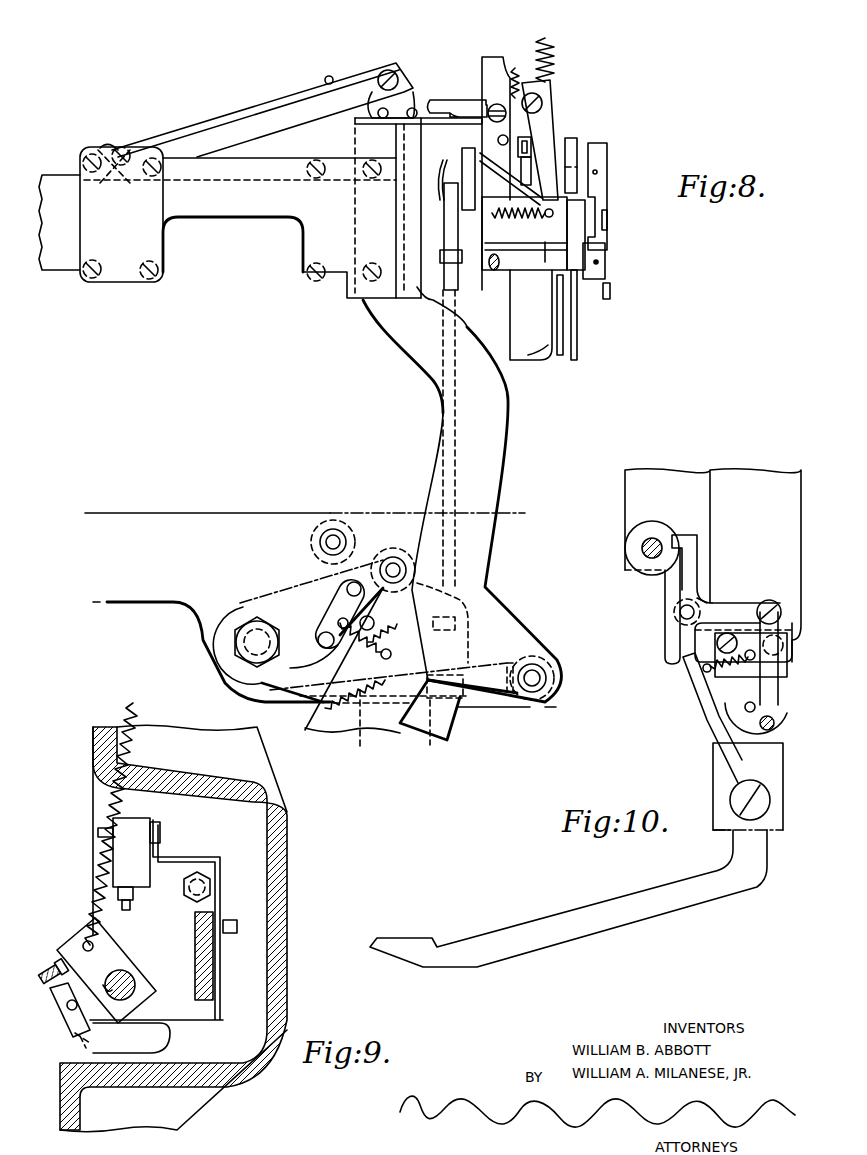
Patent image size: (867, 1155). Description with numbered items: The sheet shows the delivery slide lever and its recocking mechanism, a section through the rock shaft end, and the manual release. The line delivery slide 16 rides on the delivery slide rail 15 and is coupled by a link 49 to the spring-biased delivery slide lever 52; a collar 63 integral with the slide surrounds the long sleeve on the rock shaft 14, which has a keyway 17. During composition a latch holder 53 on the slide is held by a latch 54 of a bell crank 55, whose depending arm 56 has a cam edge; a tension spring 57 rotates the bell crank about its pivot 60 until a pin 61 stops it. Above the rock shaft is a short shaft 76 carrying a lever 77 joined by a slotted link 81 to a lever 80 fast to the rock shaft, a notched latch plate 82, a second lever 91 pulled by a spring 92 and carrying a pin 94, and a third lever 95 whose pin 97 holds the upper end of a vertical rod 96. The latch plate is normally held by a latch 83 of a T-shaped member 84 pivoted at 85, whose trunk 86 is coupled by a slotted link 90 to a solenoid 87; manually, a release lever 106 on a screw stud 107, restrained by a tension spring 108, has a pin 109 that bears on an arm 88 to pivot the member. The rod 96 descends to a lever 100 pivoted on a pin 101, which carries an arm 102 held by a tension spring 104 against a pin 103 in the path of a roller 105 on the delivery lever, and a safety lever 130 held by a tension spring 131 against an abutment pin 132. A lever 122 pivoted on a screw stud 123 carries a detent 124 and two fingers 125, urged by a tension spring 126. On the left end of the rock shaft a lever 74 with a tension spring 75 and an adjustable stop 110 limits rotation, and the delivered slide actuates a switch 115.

In FIG. 8, the rock shaft 14 is at (526, 272).
In FIG. 9, the rock shaft 14 is at (133, 982).
In FIG. 8, the delivery slide rail 15 is at (218, 268).
In FIG. 8, the line delivery slide 16 is at (248, 207).
In FIG. 8, the keyway 17 is at (497, 253).
In FIG. 9, the keyway 17 is at (104, 983).
In FIG. 8, the link 49 is at (263, 112).
In FIG. 8, the delivery slide lever 52 is at (497, 442).
In FIG. 8, the latch holder 53 is at (446, 120).
In FIG. 8, the latch 54 is at (437, 103).
In FIG. 8, the bell crank 55 is at (507, 100).
In FIG. 8, the depending arm 56 is at (524, 231).
In FIG. 8, the tension spring 57 is at (516, 66).
In FIG. 8, the pivot 60 is at (490, 118).
In FIG. 8, the pin 61 is at (499, 136).
In FIG. 8, the collar 63 is at (411, 240).
In FIG. 9, the lever 74 is at (112, 950).
In FIG. 9, the tension spring 75 is at (100, 882).
In FIG. 8, the short shaft 76 is at (598, 142).
In FIG. 8, the lever 77 is at (596, 200).
In FIG. 8, the lever 80 is at (606, 275).
In FIG. 8, the slotted link 81 is at (606, 296).
In FIG. 8, the latch plate 82 is at (572, 136).
In FIG. 10, the latch plate 82 is at (654, 530).
In FIG. 8, the latch 83 is at (575, 235).
In FIG. 10, the latch 83 is at (690, 552).
In FIG. 10, the T-shaped member 84 is at (708, 604).
In FIG. 10, the pivot 85 is at (680, 612).
In FIG. 10, the trunk 86 is at (750, 605).
In FIG. 8, the solenoid 87 is at (533, 356).
In FIG. 10, the solenoid 87 is at (754, 735).
In FIG. 10, the arm 88 is at (674, 672).
In FIG. 8, the link 90 is at (579, 325).
In FIG. 10, the link 90 is at (758, 690).
In FIG. 8, the second lever 91 is at (525, 163).
In FIG. 8, the spring 92 is at (556, 45).
In FIG. 8, the pin 94 is at (517, 147).
In FIG. 8, the third lever 95 is at (463, 155).
In FIG. 8, the vertical rod 96 is at (452, 293).
In FIG. 8, the pin 97 is at (440, 170).
In FIG. 8, the lever 100 is at (237, 615).
In FIG. 8, the pin 101 is at (245, 645).
In FIG. 8, the arm 102 is at (338, 590).
In FIG. 8, the pin 103 is at (375, 622).
In FIG. 8, the tension spring 104 is at (337, 657).
In FIG. 8, the roller 105 is at (392, 560).
In FIG. 10, the release lever 106 is at (549, 922).
In FIG. 10, the screw stud 107 is at (742, 800).
In FIG. 10, the tension spring 108 is at (698, 690).
In FIG. 10, the pin 109 is at (698, 645).
In FIG. 9, the adjustable stop 110 is at (52, 965).
In FIG. 9, the switch 115 is at (130, 830).
In FIG. 8, the lever 122 is at (545, 118).
In FIG. 8, the screw stud 123 is at (542, 100).
In FIG. 8, the detent 124 is at (548, 192).
In FIG. 8, the fingers 125 is at (545, 264).
In FIG. 8, the tension spring 126 is at (527, 220).
In FIG. 8, the safety lever 130 is at (478, 700).
In FIG. 8, the tension spring 131 is at (385, 693).
In FIG. 8, the abutment pin 132 is at (458, 722).